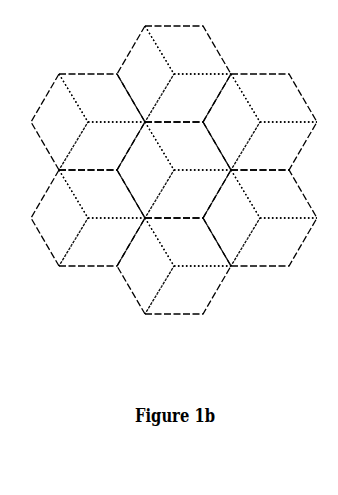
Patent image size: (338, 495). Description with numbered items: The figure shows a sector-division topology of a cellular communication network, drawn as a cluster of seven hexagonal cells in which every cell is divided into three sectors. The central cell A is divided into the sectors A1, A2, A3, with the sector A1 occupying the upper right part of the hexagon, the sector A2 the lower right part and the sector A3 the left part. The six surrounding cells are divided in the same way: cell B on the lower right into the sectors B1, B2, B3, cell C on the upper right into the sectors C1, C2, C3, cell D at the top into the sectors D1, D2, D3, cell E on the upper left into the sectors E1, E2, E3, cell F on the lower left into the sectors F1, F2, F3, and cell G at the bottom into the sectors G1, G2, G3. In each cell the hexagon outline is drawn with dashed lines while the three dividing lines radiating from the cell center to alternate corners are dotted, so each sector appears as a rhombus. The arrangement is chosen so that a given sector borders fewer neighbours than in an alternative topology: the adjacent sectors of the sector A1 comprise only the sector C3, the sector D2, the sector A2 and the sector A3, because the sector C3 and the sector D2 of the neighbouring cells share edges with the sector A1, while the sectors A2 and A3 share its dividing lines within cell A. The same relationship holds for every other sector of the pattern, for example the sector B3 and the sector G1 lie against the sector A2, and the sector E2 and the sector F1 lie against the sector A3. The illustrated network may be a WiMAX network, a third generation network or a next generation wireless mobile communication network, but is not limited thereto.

The sector A1 is at (188, 146).
The sector A2 is at (188, 194).
The sector A3 is at (145, 170).
The sector 1 of cell B B1 is at (274, 194).
The sector 2 of cell B B2 is at (274, 242).
The sector 3 of cell B B3 is at (231, 218).
The sector 1 of cell C C1 is at (274, 98).
The sector 2 of cell C C2 is at (274, 146).
The sector C3 is at (231, 122).
The sector 1 of cell D D1 is at (188, 50).
The sector D2 is at (188, 98).
The sector 3 of cell D D3 is at (145, 74).
The sector 1 of cell E E1 is at (102, 98).
The sector 2 of cell E E2 is at (102, 146).
The sector 3 of cell E E3 is at (59, 122).
The sector 1 of cell F F1 is at (102, 194).
The sector 2 of cell F F2 is at (102, 242).
The sector 3 of cell F F3 is at (59, 218).
The sector 1 of cell G G1 is at (188, 242).
The sector 2 of cell G G2 is at (188, 290).
The sector 3 of cell G G3 is at (145, 266).